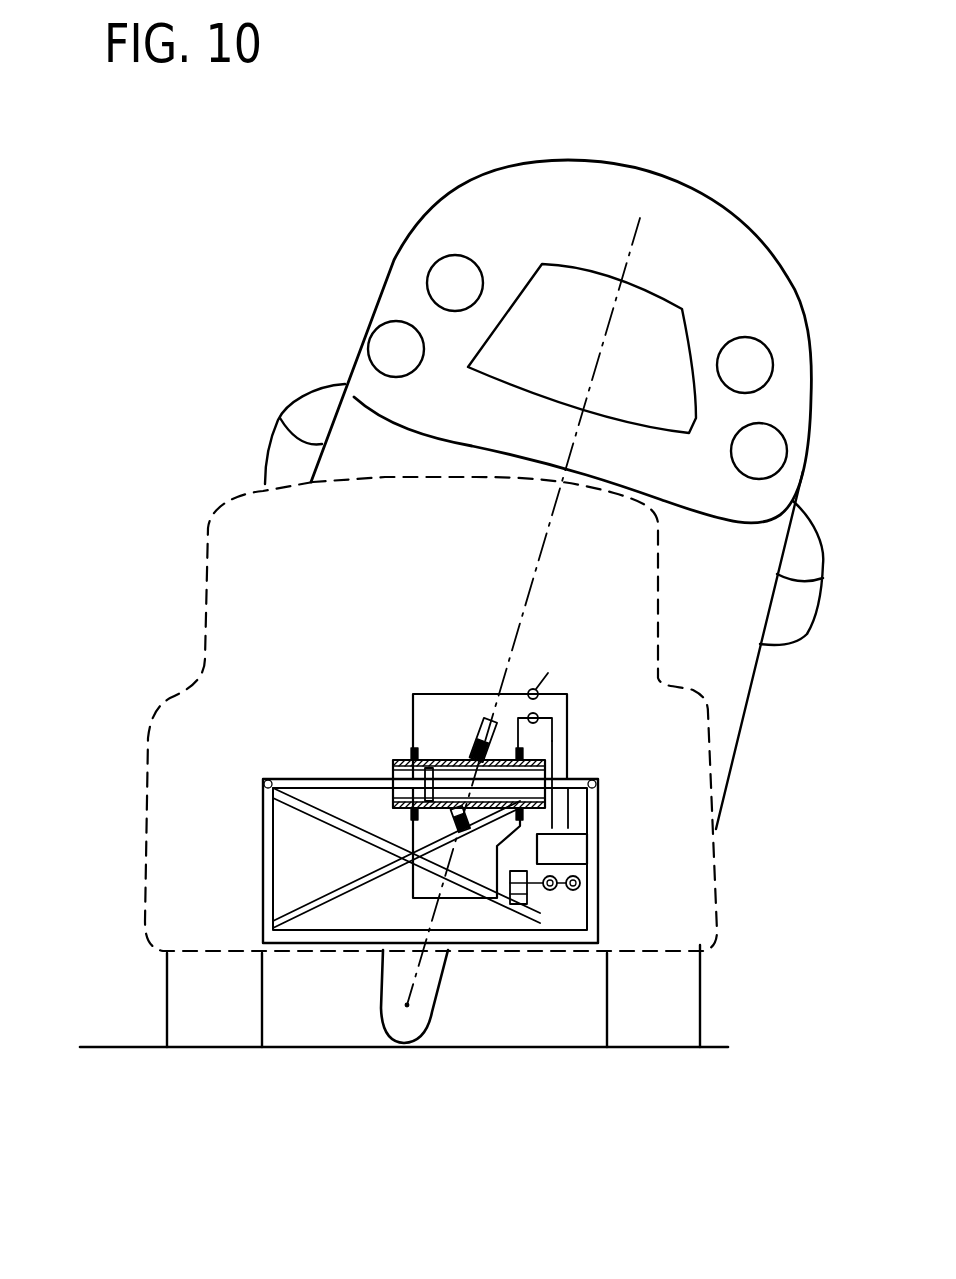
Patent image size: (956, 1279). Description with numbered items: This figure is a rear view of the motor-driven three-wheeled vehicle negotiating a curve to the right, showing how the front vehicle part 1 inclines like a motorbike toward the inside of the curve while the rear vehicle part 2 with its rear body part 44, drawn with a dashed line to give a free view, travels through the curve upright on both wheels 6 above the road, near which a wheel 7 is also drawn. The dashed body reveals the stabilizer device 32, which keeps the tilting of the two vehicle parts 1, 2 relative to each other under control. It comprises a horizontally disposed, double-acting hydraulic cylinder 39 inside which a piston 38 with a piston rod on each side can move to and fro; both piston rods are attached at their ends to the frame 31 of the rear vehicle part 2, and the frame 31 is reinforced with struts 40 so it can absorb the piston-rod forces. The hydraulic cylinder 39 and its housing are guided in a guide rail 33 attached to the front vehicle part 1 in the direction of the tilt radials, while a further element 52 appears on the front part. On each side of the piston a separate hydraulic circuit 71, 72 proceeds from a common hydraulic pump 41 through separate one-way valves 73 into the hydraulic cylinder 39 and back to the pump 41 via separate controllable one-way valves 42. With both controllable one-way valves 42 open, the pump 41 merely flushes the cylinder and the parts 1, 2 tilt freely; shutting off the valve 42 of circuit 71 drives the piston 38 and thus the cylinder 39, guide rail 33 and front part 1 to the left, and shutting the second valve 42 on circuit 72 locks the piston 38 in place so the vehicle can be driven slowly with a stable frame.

The front vehicle part 1 is at (314, 366).
The rear vehicle part 2 is at (182, 540).
The wheels 6 is at (185, 984).
The wheel 7 is at (417, 989).
The frame 31 is at (539, 925).
The stabilizer device 32 is at (558, 777).
The guide rail 33 is at (212, 606).
The piston 38 is at (422, 758).
The hydraulic cylinder 39 is at (549, 755).
The struts 40 is at (349, 816).
The hydraulic pump 41 is at (569, 843).
The controllable one-way valves 42 is at (512, 905).
The rear body part 44 is at (194, 650).
The back plate 52 is at (713, 663).
The hydraulic circuit 71 is at (405, 723).
The hydraulic circuit 72 is at (579, 858).
The one-way valves 73 is at (528, 683).